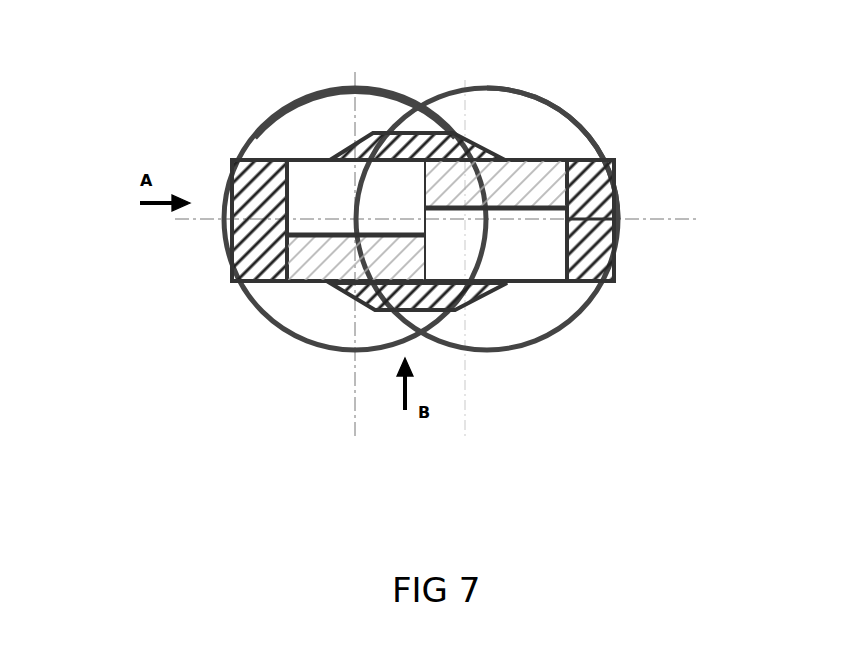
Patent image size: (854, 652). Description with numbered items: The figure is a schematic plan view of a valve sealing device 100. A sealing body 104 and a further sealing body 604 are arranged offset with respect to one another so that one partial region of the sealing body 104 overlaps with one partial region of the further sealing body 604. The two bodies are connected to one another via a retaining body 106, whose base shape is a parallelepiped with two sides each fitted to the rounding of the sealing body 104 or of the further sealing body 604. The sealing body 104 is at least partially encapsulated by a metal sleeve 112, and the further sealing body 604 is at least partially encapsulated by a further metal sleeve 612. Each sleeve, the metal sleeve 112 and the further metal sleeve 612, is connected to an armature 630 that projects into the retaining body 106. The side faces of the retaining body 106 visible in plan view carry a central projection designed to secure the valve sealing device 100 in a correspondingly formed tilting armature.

The valve sealing device 100 is at (391, 276).
The sealing body 104 is at (322, 320).
The further sealing body 604 is at (492, 318).
The metal sleeve 112 is at (366, 86).
The further metal sleeve 612 is at (577, 119).
The retaining body 106 is at (613, 192).
The armature 630 is at (318, 181).